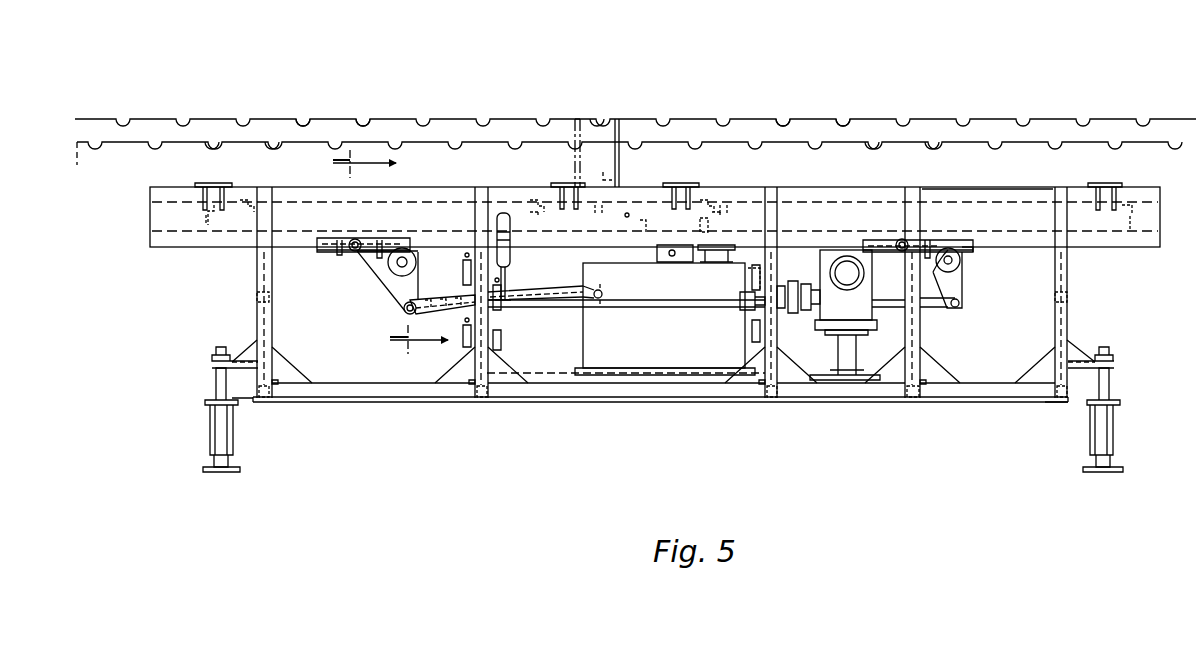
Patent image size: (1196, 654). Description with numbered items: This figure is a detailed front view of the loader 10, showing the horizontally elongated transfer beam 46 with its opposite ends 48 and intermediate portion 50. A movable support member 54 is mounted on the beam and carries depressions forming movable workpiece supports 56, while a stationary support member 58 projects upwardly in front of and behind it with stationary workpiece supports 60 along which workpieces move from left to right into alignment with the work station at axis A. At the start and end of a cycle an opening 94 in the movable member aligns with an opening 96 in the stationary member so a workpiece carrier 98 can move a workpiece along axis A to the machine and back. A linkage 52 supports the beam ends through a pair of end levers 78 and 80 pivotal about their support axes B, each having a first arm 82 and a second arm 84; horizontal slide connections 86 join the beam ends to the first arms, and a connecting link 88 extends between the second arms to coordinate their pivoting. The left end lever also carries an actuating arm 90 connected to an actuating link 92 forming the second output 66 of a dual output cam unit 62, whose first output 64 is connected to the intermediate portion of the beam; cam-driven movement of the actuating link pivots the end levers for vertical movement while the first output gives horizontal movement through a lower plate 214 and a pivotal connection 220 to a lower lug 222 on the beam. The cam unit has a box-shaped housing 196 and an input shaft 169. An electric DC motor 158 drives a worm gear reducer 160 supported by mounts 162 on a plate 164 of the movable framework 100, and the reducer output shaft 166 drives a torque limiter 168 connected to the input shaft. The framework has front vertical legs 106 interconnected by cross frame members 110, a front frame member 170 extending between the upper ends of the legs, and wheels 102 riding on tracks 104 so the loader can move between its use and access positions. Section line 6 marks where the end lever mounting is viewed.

The loader 10 is at (980, 50).
The transfer beam 46 is at (433, 200).
The opposite ends 48 is at (222, 232).
The intermediate portion 50 is at (752, 200).
The linkage 52 is at (589, 314).
The movable support member 54 is at (188, 147).
The movable workpiece supports 56 is at (272, 146).
The stationary support member 58 is at (402, 122).
The stationary workpiece supports 60 is at (362, 123).
The dual output cam unit 62 is at (628, 360).
The first output 64 is at (660, 253).
The second output 66 is at (596, 290).
The end lever 78 is at (392, 294).
The end lever 80 is at (970, 264).
The first arm 82 is at (385, 258).
The second arm 84 is at (410, 290).
The horizontal slide connection 86 is at (330, 255).
The connecting link 88 is at (652, 309).
The actuating arm 90 is at (405, 315).
The actuating link 92 is at (546, 292).
The opening 94 is at (606, 178).
The opening 96 is at (622, 119).
The workpiece carrier 98 is at (582, 118).
The movable framework 100 is at (538, 405).
The wheels 102 is at (232, 431).
The tracks 104 is at (233, 463).
The front vertical legs 106 is at (266, 336).
The cross frame members 110 is at (258, 298).
The electric DC motor 158 is at (873, 270).
The worm gear reducer 160 is at (835, 316).
The mounts 162 is at (857, 358).
The plate 164 is at (675, 381).
The output shaft 166 is at (810, 288).
The torque limiter 168 is at (775, 285).
The input shaft 169 is at (755, 262).
The front frame member 170 is at (1013, 197).
The housing 196 is at (585, 341).
The lower plate 214 is at (670, 250).
The pivotal connection 220 is at (680, 256).
The lower lug 222 is at (672, 250).
The section line 6 is at (389, 259).
The axis A is at (598, 120).
The pivotal support axis B is at (404, 257).